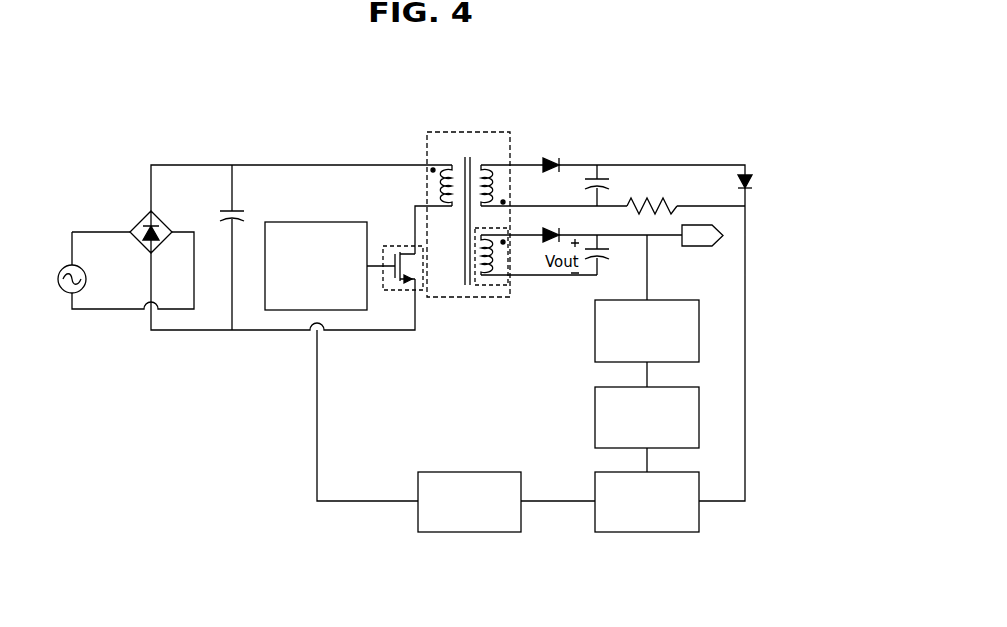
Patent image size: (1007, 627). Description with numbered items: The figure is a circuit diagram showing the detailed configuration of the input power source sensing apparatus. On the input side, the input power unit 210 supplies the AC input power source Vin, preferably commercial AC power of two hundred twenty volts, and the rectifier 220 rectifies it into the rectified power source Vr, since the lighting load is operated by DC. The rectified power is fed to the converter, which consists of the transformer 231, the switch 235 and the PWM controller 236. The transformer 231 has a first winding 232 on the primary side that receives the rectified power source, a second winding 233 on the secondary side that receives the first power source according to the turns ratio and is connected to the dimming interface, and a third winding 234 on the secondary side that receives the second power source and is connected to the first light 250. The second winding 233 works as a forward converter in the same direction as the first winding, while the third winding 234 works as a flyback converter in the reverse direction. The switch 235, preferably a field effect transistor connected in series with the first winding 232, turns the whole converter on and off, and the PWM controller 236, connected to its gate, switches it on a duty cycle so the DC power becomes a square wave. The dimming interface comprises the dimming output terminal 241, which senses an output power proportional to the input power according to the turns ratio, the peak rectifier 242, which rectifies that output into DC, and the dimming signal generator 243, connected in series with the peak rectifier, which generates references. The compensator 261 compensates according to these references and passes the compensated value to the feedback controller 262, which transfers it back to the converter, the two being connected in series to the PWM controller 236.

The input power unit 210 is at (63, 293).
The rectifier 220 is at (143, 218).
The transformer 231 is at (449, 132).
The first winding 232 is at (452, 209).
The second winding 233 is at (488, 287).
The third winding 234 is at (485, 160).
The switch 235 is at (391, 290).
The PWM controller 236 is at (315, 222).
The dimming output terminal 241 is at (718, 247).
The peak rectifier 242 is at (595, 327).
The dimming signal generator 243 is at (595, 413).
The first light 250 is at (748, 173).
The compensator 261 is at (645, 534).
The feedback controller 262 is at (468, 535).